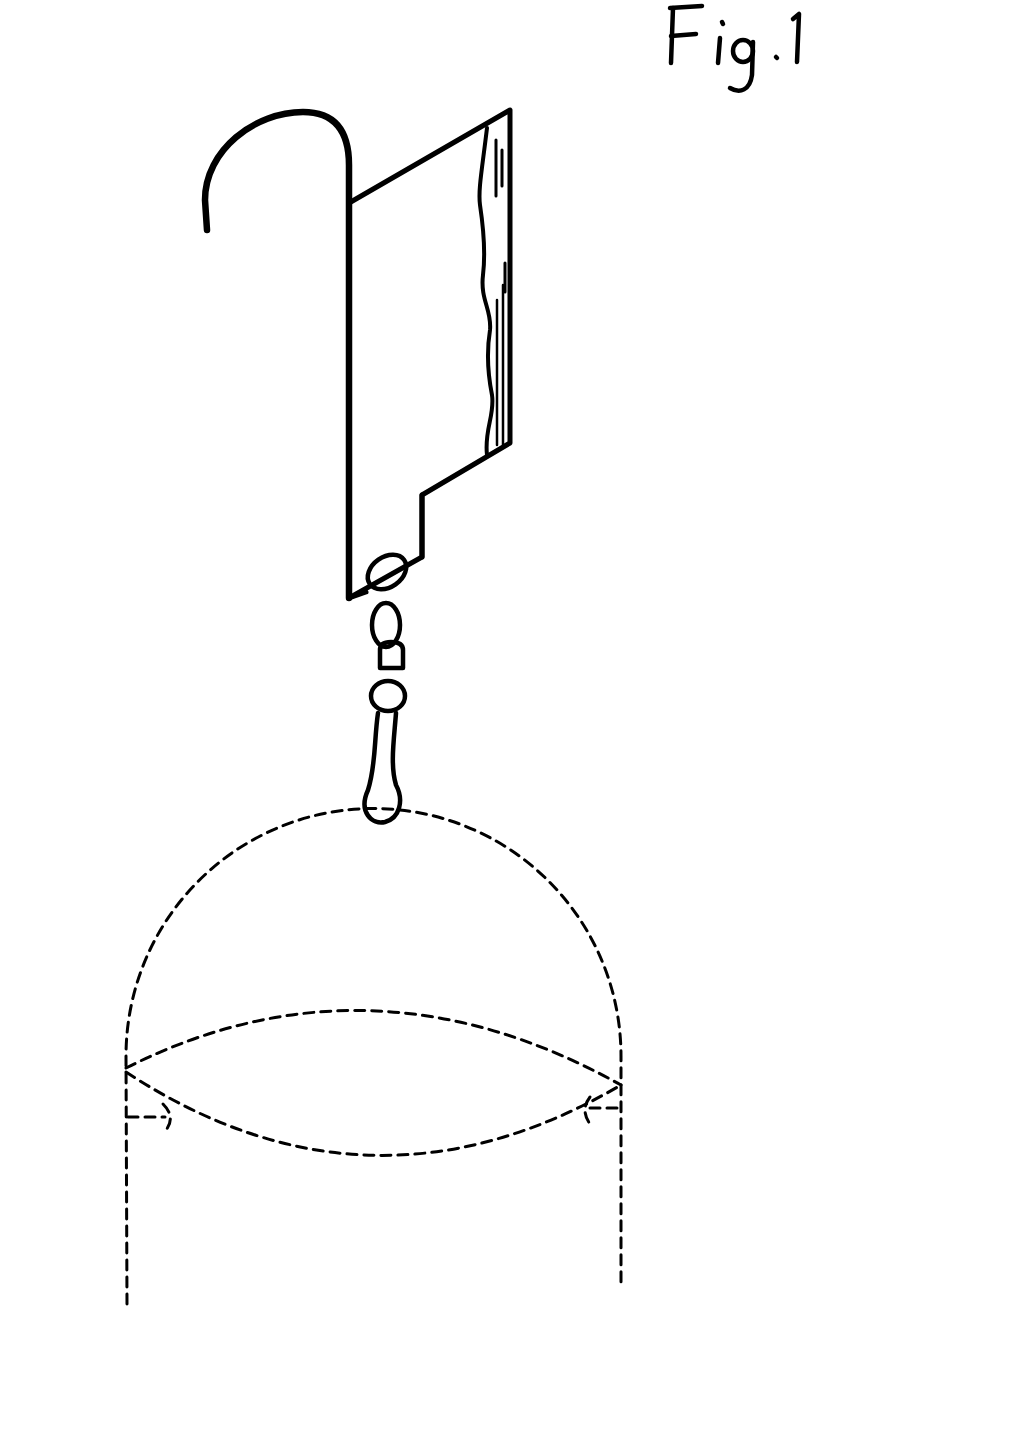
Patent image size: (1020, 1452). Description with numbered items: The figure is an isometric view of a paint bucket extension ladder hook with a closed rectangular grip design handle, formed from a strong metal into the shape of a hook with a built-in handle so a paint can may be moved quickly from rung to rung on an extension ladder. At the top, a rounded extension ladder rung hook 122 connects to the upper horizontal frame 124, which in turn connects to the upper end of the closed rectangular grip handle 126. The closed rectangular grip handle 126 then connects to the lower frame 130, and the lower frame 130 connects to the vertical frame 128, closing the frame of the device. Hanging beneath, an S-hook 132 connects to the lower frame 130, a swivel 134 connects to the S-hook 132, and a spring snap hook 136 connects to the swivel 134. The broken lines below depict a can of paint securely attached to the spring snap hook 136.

The rounded extension ladder rung hook 122 is at (287, 108).
The upper horizontal frame 124 is at (445, 145).
The closed rectangular grip handle 126 is at (512, 243).
The vertical frame 128 is at (349, 360).
The lower frame 130 is at (422, 525).
The S-hook 132 is at (405, 590).
The swivel 134 is at (405, 655).
The spring snap hook 136 is at (400, 745).